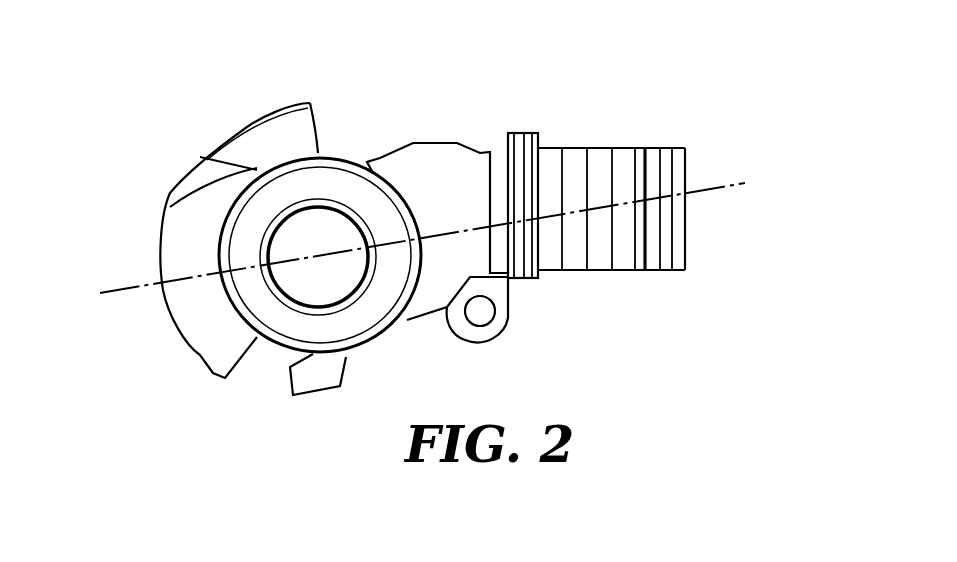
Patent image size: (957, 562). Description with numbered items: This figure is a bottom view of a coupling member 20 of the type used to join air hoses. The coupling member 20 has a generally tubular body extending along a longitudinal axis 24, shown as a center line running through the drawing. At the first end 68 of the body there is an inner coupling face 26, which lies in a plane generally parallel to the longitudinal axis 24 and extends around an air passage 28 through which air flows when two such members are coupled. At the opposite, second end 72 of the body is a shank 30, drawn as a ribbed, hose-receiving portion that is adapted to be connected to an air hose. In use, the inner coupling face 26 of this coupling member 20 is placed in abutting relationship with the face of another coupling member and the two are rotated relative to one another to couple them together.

The coupling member 20 is at (520, 112).
The longitudinal axis 24 is at (712, 188).
The inner coupling face 26 is at (333, 187).
The air passage 28 is at (307, 279).
The shank 30 is at (625, 147).
The first end 68 is at (160, 186).
The second end 72 is at (698, 284).